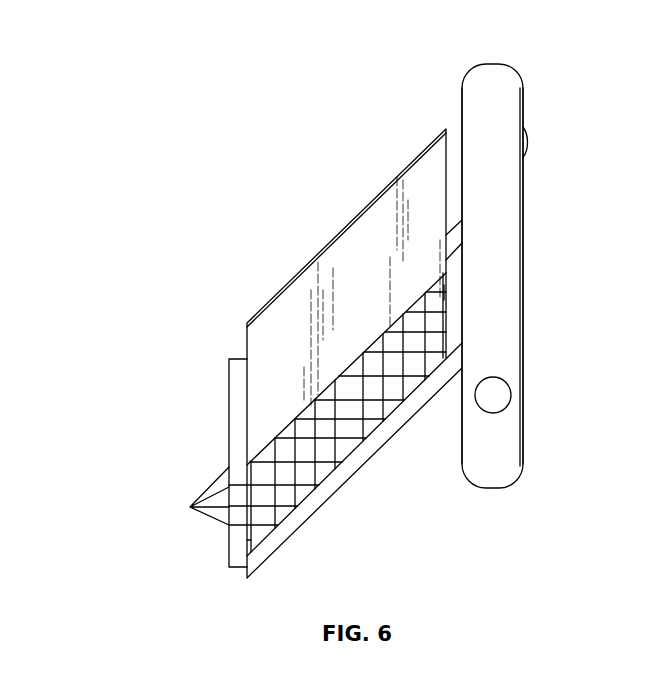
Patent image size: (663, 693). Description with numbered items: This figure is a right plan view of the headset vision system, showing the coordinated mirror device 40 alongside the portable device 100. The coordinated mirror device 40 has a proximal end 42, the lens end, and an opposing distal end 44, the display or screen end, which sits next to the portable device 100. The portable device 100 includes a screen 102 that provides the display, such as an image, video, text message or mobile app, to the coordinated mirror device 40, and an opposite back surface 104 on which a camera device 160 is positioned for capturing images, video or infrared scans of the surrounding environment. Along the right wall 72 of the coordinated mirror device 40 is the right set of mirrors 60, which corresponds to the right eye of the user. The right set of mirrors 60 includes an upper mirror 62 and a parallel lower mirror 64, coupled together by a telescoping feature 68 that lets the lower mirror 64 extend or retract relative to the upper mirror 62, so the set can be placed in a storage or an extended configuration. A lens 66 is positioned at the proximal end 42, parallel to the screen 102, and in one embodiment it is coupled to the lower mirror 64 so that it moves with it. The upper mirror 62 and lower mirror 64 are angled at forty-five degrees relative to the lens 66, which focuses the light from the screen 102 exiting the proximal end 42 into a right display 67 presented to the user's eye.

The portable device 100 is at (495, 252).
The screen 102 is at (455, 100).
The back surface 104 is at (534, 100).
The camera device 160 is at (530, 143).
The coordinated mirror device 40 is at (349, 354).
The proximal end 42 is at (349, 426).
The distal end 44 is at (451, 396).
The right set of mirrors 60 is at (331, 353).
The upper mirror 62 is at (456, 234).
The lower mirror 64 is at (363, 450).
The lens 66 is at (240, 401).
The right display 67 is at (187, 513).
The telescoping feature 68 is at (448, 300).
The right wall 72 is at (368, 228).